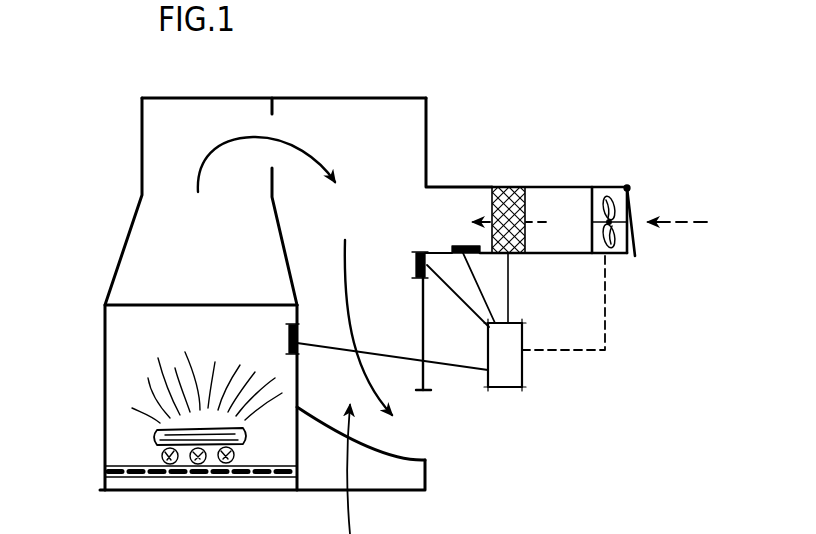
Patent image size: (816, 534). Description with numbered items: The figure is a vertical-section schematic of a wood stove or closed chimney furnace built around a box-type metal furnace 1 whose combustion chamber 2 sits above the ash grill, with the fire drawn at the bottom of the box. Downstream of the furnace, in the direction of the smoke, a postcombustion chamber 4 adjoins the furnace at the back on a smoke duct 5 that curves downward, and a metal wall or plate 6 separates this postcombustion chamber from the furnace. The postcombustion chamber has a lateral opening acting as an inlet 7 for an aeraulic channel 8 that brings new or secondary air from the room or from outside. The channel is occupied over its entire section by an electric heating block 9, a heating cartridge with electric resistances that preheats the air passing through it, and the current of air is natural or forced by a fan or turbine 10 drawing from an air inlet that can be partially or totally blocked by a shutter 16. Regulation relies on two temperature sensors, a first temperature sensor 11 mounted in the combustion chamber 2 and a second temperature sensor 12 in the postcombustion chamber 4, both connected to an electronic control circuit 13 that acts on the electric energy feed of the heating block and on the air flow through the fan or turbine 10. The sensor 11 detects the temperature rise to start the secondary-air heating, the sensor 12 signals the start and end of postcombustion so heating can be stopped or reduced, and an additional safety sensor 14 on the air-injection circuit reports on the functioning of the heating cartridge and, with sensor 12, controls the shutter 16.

The metal furnace 1 is at (90, 362).
The combustion chamber 2 is at (130, 437).
The postcombustion chamber 4 is at (377, 210).
The smoke duct 5 is at (318, 143).
The metal wall or plate 6 is at (280, 243).
The inlet 7 is at (423, 217).
The aeraulic channel 8 is at (611, 184).
The electric heating block 9 is at (570, 187).
The fan or turbine 10 is at (632, 185).
The temperature sensor 11 is at (283, 346).
The temperature sensor 12 is at (430, 262).
The electronic control circuit 13 is at (502, 373).
The safety sensor 14 is at (468, 244).
The shutter 16 is at (645, 243).